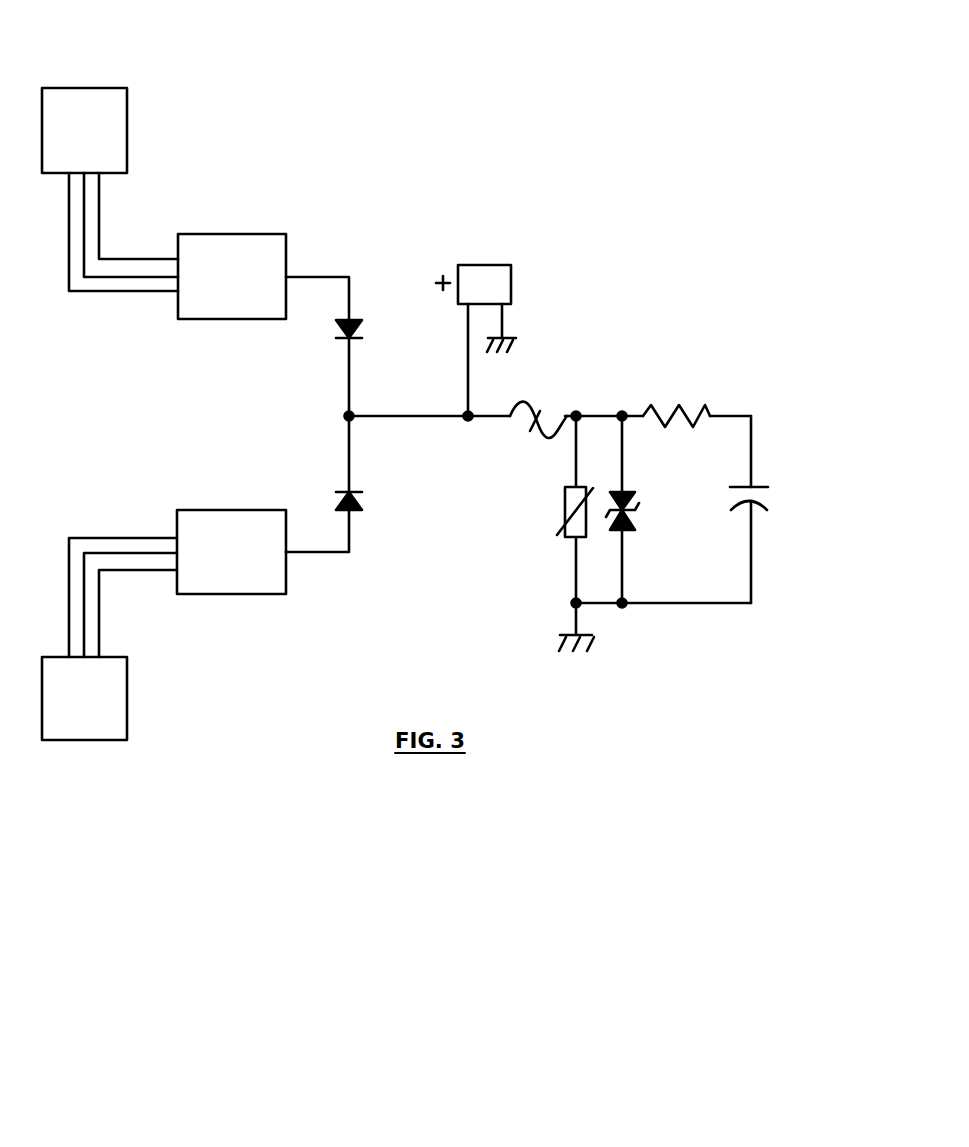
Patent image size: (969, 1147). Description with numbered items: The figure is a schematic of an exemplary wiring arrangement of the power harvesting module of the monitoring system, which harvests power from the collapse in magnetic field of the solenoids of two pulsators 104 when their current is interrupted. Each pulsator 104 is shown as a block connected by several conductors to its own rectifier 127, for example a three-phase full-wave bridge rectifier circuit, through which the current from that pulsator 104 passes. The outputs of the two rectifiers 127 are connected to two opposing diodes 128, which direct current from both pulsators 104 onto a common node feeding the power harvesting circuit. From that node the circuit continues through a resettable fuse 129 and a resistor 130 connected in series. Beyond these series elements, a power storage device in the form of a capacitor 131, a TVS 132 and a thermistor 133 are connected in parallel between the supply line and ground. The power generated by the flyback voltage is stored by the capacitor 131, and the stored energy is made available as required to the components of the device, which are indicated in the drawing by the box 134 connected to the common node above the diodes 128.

The pulsator 104 is at (112, 88).
The rectifier 127 is at (255, 234).
The opposing diode 128 is at (360, 320).
The resettable fuse 129 is at (524, 398).
The resistor 130 is at (683, 408).
The capacitor 131 is at (753, 483).
The TVS 132 is at (633, 530).
The thermistor 133 is at (560, 502).
The components of the device 134 is at (511, 278).